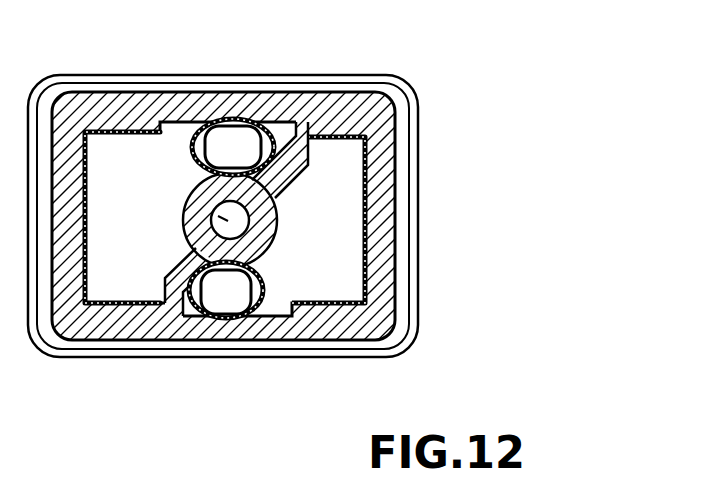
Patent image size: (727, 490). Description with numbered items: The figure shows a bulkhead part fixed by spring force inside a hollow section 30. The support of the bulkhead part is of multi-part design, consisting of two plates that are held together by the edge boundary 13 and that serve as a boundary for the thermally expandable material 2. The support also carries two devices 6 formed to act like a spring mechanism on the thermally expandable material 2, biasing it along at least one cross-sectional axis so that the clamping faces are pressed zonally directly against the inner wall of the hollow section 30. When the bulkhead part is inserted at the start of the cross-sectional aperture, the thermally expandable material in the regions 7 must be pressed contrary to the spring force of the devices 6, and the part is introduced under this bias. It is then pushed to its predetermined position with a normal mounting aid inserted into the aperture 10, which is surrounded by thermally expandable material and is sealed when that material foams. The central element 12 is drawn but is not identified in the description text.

The hollow section 30 is at (410, 125).
The thermally expandable material 2 is at (380, 178).
The edge boundary 13 is at (362, 296).
The aperture 10 is at (207, 192).
The central pin bar 12 is at (283, 222).
The regions 7 is at (262, 96).
The devices 6 is at (232, 142).